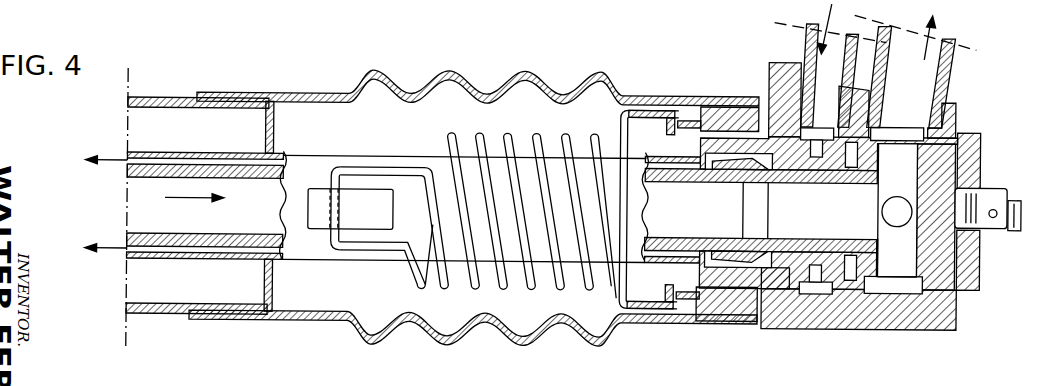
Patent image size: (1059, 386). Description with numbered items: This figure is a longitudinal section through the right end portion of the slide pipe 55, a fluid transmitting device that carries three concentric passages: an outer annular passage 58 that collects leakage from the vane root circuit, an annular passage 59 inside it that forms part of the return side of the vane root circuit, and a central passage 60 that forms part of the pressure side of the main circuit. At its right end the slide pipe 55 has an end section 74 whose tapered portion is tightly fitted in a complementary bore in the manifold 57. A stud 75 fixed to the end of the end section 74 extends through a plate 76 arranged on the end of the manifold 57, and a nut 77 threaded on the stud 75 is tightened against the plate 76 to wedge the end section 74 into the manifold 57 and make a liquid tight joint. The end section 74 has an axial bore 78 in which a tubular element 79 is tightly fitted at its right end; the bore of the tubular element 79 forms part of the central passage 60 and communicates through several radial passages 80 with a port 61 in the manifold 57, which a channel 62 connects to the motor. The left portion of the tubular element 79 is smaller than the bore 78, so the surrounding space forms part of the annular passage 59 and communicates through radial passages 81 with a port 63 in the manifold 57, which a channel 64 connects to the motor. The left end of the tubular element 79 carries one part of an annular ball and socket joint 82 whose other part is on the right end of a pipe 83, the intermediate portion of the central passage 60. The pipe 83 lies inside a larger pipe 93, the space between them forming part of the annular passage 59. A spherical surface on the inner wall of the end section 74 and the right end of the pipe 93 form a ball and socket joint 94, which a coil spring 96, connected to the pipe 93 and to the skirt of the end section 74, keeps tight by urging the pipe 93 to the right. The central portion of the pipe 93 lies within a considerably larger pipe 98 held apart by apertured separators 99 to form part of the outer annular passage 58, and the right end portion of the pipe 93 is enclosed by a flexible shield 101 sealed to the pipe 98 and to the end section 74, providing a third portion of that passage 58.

The slide pipe 55 is at (355, 60).
The manifold 57 is at (945, 309).
The outer annular passage 58 is at (212, 224).
The annular passage 59 is at (676, 228).
The central passage 60 is at (144, 214).
The port 61 is at (888, 131).
The channel 62 is at (953, 54).
The port 63 is at (813, 132).
The channel 64 is at (803, 37).
The right end section 74 is at (728, 107).
The stud 75 is at (1015, 222).
The plate 76 is at (975, 271).
The nut 77 is at (988, 181).
The axial bore 78 is at (778, 296).
The tubular element 79 is at (878, 238).
The radial passages 80 is at (898, 153).
The radial passages 81 is at (815, 153).
The annular ball and socket joint 82 is at (755, 169).
The pipe 83 is at (127, 169).
The pipe 93 is at (393, 163).
The ball and socket joint 94 is at (750, 279).
The coil spring 96 is at (538, 141).
The pipe 98 is at (167, 311).
The apertured separators 99 is at (273, 110).
The flexible shield 101 is at (428, 341).